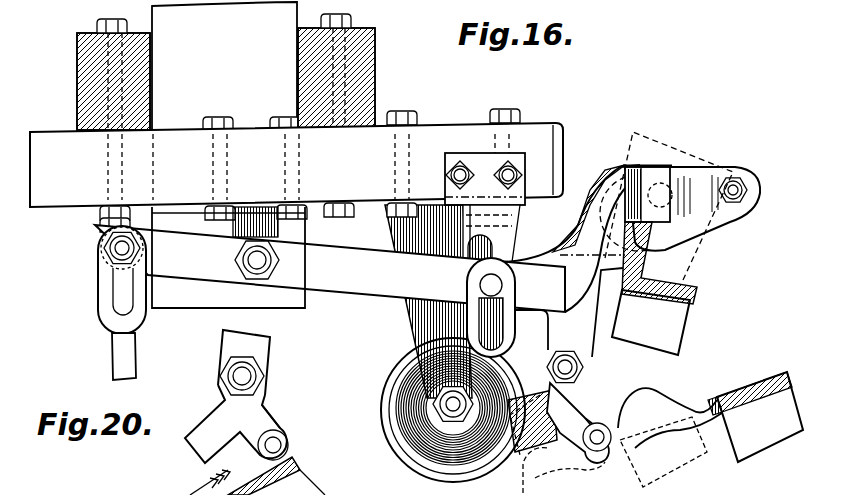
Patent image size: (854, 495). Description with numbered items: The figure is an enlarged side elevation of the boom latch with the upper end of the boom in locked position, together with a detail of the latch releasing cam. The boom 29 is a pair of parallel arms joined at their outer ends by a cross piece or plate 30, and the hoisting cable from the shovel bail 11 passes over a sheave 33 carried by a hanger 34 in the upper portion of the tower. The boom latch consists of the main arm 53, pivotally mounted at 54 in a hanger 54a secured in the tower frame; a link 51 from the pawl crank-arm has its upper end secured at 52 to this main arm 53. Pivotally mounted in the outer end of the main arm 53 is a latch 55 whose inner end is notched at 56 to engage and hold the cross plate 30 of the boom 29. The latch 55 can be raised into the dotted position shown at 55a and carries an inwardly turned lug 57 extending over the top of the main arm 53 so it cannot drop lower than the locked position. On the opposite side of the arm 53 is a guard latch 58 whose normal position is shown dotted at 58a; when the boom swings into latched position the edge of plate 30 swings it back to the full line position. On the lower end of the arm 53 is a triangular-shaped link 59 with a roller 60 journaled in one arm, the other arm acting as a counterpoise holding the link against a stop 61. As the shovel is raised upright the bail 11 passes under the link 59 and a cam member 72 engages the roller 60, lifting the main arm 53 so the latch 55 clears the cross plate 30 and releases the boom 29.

In FIG. 16, the shovel bail 11 is at (755, 417).
In FIG. 16, the boom 29 is at (651, 322).
In FIG. 16, the cross piece or plate 30 is at (640, 270).
In FIG. 16, the sheave 33 is at (444, 410).
In FIG. 16, the hanger 34 is at (427, 301).
In FIG. 16, the link 51 is at (506, 307).
In FIG. 16, the link connection 52 is at (460, 264).
In FIG. 16, the main arm 53 is at (330, 268).
In FIG. 20, the main arm 53 is at (234, 362).
In FIG. 16, the pivot 54 is at (242, 260).
In FIG. 16, the hanger 54a is at (296, 226).
In FIG. 16, the latch 55 is at (693, 209).
In FIG. 16, the raised latch position 55a is at (722, 156).
In FIG. 16, the notch 56 is at (692, 226).
In FIG. 16, the inwardly turned lug 57 is at (647, 184).
In FIG. 16, the guard latch 58 is at (572, 238).
In FIG. 16, the normal guard latch position 58a is at (688, 268).
In FIG. 16, the triangular-shaped link 59 is at (578, 406).
In FIG. 20, the triangular-shaped link 59 is at (236, 410).
In FIG. 16, the roller 60 is at (597, 451).
In FIG. 20, the roller 60 is at (288, 443).
In FIG. 16, the stop 61 is at (604, 409).
In FIG. 20, the stop 61 is at (264, 410).
In FIG. 16, the cam member 72 is at (765, 366).